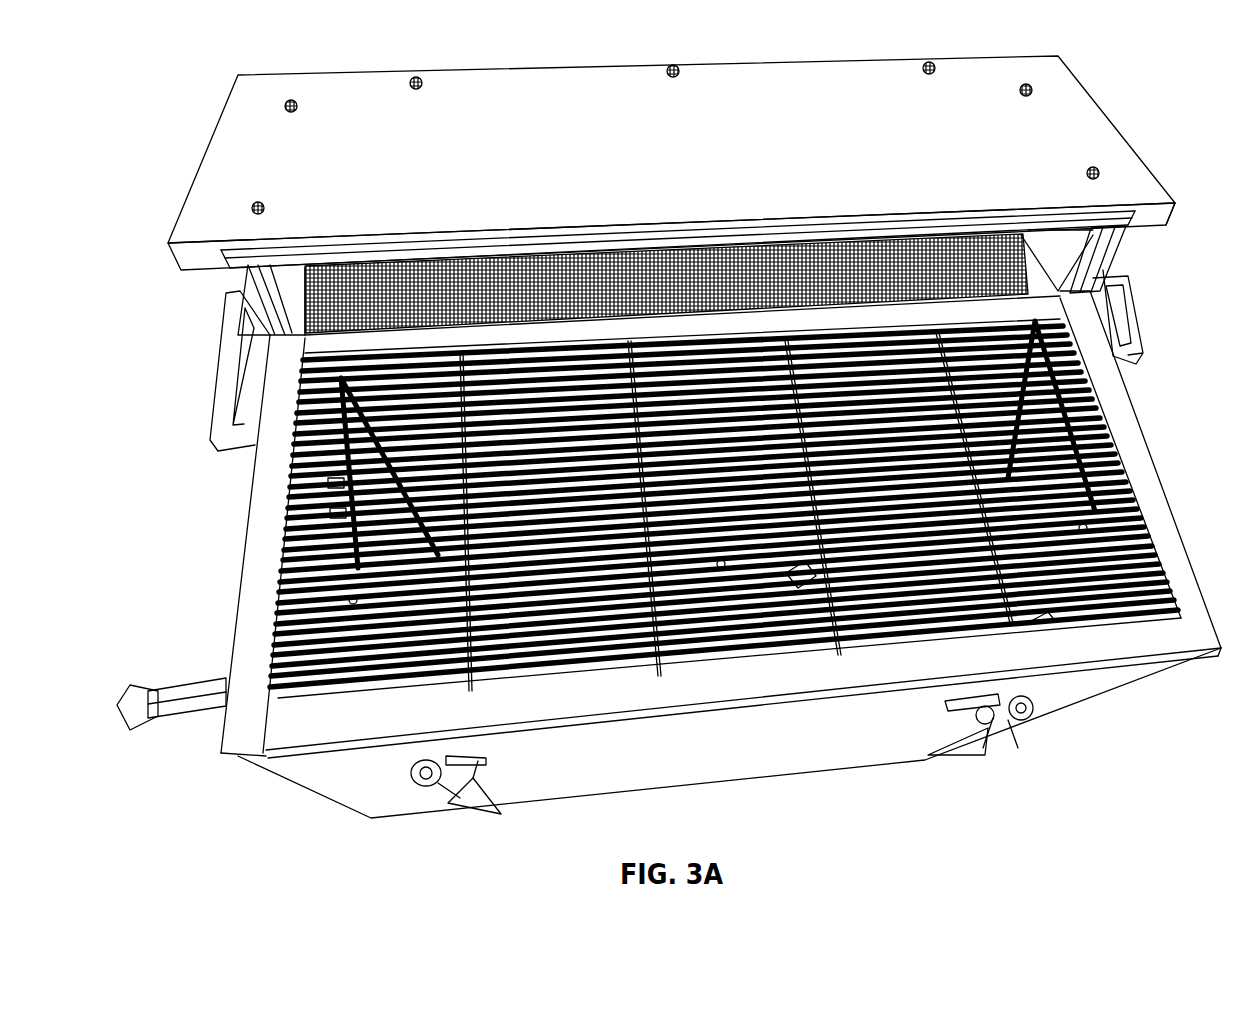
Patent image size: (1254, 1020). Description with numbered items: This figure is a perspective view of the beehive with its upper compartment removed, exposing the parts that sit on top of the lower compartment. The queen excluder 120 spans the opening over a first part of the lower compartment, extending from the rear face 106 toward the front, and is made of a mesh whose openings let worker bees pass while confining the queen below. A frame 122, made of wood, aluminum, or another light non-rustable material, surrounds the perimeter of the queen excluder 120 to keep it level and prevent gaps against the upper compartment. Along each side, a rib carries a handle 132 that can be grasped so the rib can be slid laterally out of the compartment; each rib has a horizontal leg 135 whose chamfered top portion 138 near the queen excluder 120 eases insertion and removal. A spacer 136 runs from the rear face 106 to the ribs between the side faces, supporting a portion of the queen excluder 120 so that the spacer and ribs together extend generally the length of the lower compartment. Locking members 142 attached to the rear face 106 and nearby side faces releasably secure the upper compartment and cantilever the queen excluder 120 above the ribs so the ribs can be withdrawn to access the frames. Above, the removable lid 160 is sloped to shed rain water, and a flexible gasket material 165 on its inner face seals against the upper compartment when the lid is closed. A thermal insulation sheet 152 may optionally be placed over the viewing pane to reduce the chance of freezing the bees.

The rear face 106 is at (805, 735).
The queen excluder 120 is at (1115, 470).
The frame 122 is at (1130, 435).
The handle 132 is at (218, 345).
The horizontal leg 135 is at (285, 465).
The spacer 136 is at (1090, 563).
The chamfered top portion 138 is at (680, 625).
The locking members 142 is at (200, 675).
The thermal insulation sheet 152 is at (340, 275).
The lid 160 is at (1085, 140).
The flexible gasket material 165 is at (1085, 230).